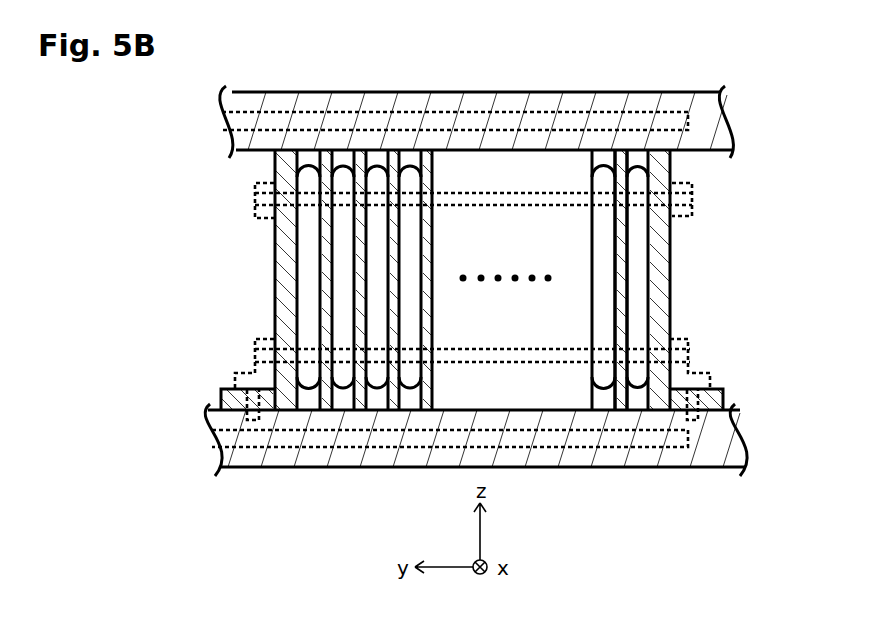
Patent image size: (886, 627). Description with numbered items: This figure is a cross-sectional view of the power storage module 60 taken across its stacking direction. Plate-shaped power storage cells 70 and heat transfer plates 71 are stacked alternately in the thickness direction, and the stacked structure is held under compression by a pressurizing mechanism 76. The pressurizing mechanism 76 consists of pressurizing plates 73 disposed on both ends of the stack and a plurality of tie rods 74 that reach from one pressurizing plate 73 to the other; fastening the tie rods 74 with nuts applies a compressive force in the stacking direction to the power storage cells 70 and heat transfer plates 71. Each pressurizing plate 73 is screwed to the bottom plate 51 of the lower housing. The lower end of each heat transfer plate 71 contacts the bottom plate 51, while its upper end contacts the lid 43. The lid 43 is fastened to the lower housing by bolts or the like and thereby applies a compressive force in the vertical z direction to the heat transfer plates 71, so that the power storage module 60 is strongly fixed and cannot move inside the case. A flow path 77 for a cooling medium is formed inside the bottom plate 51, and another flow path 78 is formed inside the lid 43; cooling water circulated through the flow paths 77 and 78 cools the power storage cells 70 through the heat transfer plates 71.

The lid 43 is at (688, 92).
The bottom plate 51 is at (700, 467).
The power storage module 60 is at (503, 234).
The power storage cell 70 is at (638, 280).
The heat transfer plate 71 is at (622, 255).
The pressurizing plate 73 is at (273, 273).
The tie rod 74 is at (502, 193).
The pressurizing mechanism 76 is at (503, 234).
The flow path 77 is at (623, 447).
The flow path 78 is at (403, 112).